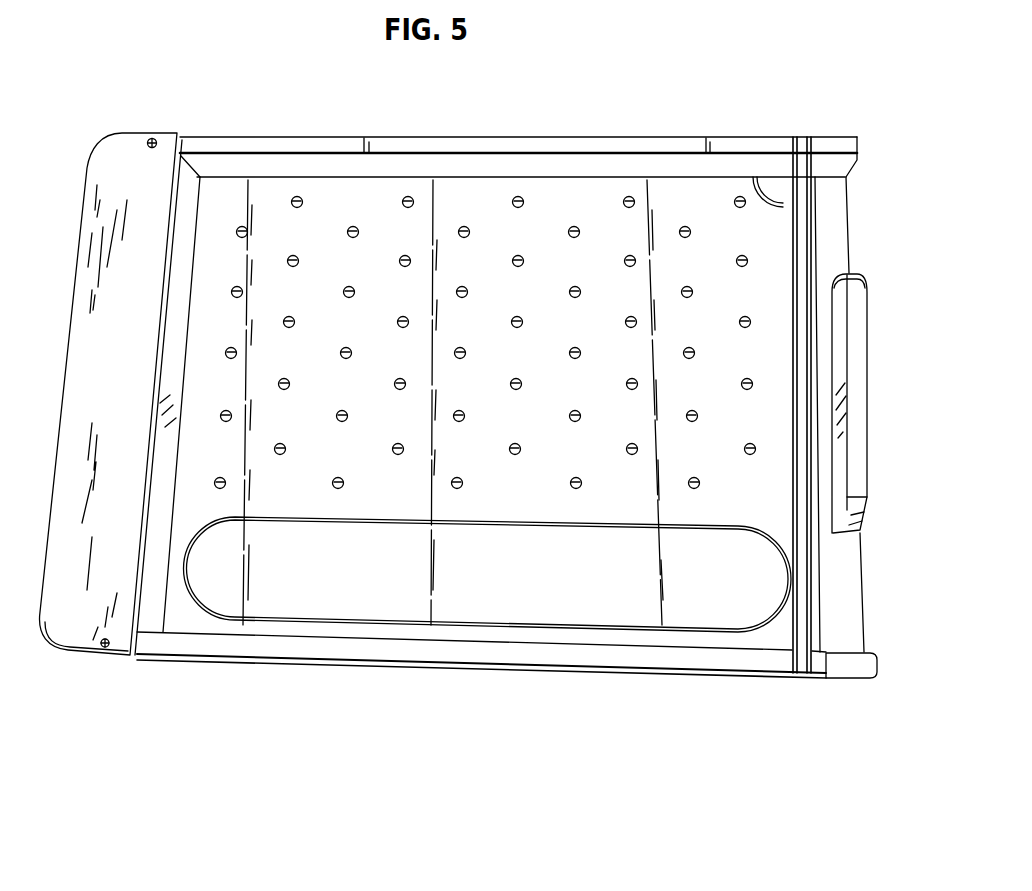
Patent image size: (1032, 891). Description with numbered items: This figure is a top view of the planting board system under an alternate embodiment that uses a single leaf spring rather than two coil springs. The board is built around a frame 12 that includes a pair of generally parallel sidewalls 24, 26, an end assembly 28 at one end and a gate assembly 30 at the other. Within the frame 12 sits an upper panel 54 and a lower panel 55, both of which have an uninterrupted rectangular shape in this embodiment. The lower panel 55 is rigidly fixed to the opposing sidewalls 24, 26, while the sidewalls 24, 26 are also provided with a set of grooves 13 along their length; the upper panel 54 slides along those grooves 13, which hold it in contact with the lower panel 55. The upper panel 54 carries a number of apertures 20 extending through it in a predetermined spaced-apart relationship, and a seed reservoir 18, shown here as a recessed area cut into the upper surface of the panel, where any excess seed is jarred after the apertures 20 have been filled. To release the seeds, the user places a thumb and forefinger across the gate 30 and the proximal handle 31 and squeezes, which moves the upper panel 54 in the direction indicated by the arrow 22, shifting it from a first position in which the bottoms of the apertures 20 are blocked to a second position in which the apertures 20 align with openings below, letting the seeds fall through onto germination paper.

The frame 12 is at (633, 688).
The grooves 13 is at (758, 641).
The seed reservoir 18 is at (308, 613).
The apertures 20 is at (220, 489).
The direction of movement 22 is at (876, 373).
The sidewall 24 is at (532, 668).
The sidewall 26 is at (534, 138).
The end assembly 28 is at (60, 300).
The gate assembly 30 is at (808, 212).
The handle 31 is at (866, 292).
The upper panel 54 is at (864, 603).
The lower panel 55 is at (871, 551).